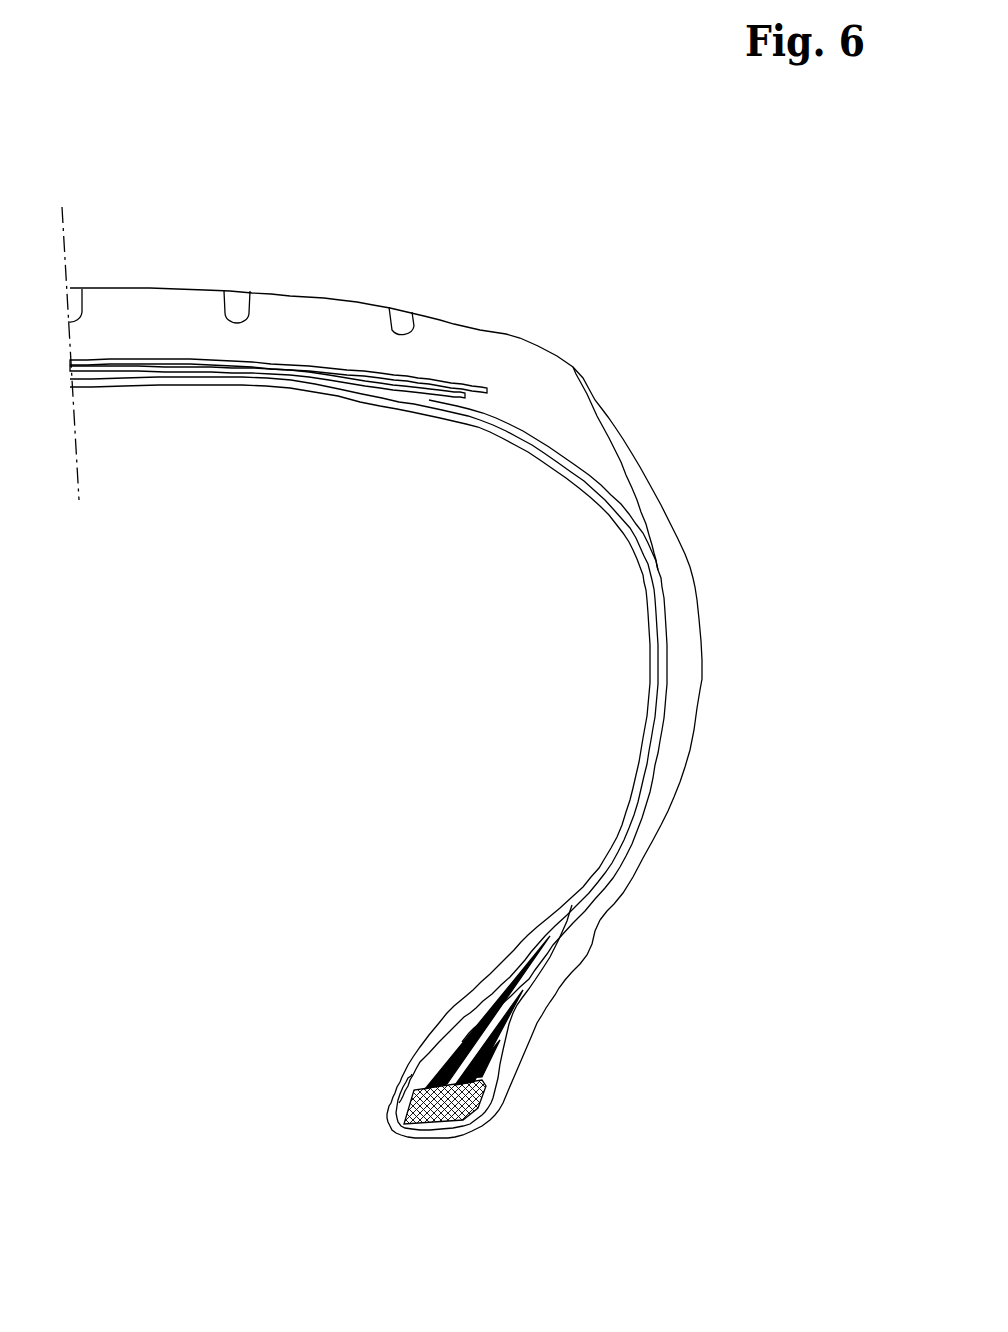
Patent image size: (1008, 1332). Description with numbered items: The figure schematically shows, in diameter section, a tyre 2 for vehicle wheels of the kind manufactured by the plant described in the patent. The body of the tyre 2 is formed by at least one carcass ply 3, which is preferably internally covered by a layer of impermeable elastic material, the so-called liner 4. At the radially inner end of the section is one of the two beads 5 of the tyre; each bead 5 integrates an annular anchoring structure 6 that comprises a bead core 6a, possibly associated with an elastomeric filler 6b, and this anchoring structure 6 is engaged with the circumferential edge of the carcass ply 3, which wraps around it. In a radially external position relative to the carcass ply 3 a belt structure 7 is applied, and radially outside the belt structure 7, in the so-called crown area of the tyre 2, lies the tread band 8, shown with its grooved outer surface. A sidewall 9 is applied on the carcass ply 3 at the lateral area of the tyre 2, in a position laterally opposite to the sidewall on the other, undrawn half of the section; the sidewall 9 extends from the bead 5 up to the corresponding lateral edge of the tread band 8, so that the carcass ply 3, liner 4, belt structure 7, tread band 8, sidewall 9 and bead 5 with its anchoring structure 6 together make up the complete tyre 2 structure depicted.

The tyre 2 is at (263, 782).
The carcass ply 3 is at (550, 440).
The liner 4 is at (473, 427).
The bead 5 is at (542, 1087).
The annular anchoring structure 6 is at (422, 1070).
The bead core 6a is at (438, 1110).
The elastomeric filler 6b is at (492, 1010).
The belt structure 7 is at (448, 380).
The tread band 8 is at (308, 290).
The sidewall 9 is at (702, 688).